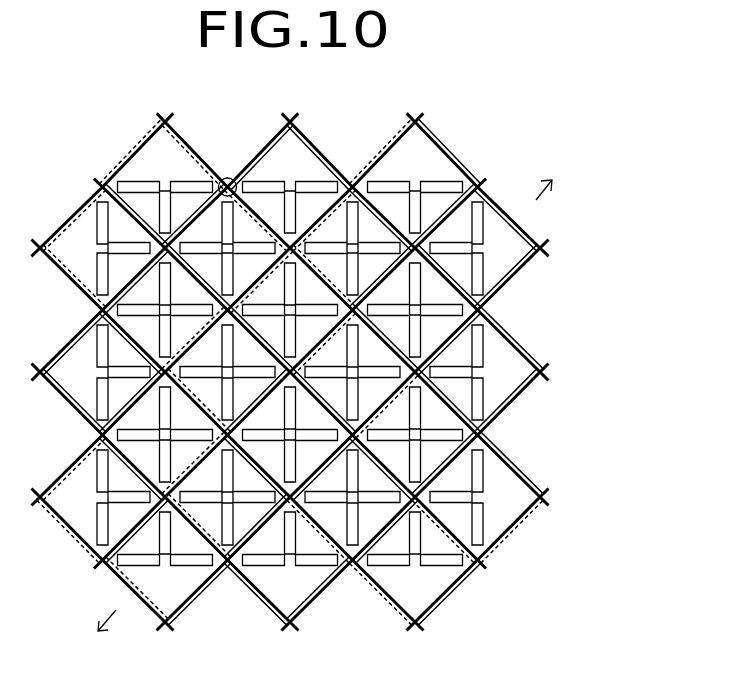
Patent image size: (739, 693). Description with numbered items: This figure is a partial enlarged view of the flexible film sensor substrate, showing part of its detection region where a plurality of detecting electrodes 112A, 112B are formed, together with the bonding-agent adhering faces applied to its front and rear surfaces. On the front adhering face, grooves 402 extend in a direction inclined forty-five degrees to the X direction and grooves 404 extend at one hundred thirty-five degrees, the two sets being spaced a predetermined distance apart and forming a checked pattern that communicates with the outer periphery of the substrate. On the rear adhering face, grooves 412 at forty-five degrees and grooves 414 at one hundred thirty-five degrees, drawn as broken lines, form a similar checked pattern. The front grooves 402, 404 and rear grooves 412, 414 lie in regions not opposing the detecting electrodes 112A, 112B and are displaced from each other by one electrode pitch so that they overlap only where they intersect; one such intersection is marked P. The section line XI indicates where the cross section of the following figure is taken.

The detecting electrode 112A is at (208, 232).
The detecting electrode 112B is at (296, 166).
The intersection position P is at (227, 178).
The groove 402 is at (507, 407).
The groove 404 is at (522, 350).
The groove 412 is at (517, 528).
The groove 414 is at (378, 592).
The section line XI- XI is at (349, 428).